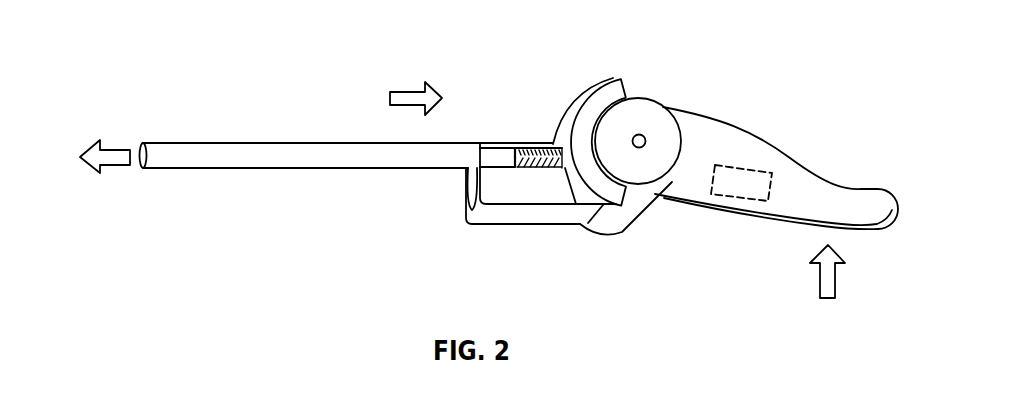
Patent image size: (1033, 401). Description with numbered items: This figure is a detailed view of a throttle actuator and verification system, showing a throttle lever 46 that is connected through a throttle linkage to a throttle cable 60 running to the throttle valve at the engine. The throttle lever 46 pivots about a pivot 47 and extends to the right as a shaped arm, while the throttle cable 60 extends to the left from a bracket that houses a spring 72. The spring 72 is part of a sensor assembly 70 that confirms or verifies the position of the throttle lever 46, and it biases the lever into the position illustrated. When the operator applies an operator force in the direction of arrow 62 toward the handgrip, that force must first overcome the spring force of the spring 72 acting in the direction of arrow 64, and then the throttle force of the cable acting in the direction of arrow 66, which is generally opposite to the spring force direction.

The throttle lever 46 is at (808, 172).
The pivot 47 is at (644, 135).
The throttle cable 60 is at (220, 142).
The arrow 62 is at (835, 283).
The arrow 64 is at (407, 88).
The arrow 66 is at (113, 148).
The sensor assembly 70 is at (753, 158).
The spring 72 is at (528, 168).